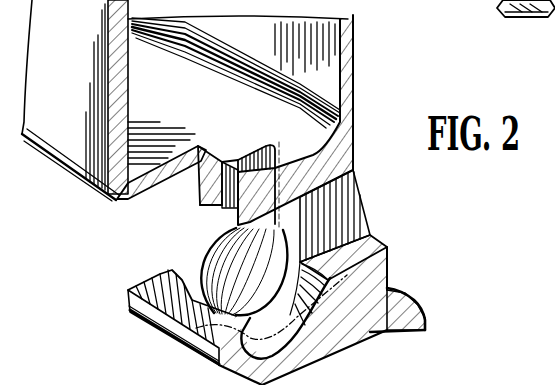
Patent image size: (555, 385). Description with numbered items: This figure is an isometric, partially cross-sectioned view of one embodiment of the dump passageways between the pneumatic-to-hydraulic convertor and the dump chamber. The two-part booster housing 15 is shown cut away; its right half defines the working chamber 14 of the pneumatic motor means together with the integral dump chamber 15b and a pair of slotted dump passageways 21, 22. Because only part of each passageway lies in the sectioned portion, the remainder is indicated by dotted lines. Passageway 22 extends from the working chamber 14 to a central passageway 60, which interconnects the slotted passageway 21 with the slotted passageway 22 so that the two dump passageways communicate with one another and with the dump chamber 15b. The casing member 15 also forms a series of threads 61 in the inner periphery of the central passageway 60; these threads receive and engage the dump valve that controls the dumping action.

The booster housing 15 is at (72, 101).
The integral dump chamber 15b is at (195, 108).
The dump passageway 21 is at (248, 158).
The series of threads 61 is at (205, 206).
The central passageway 60 is at (224, 254).
The dump passageway 22 is at (320, 220).
The working chamber 14 is at (400, 302).